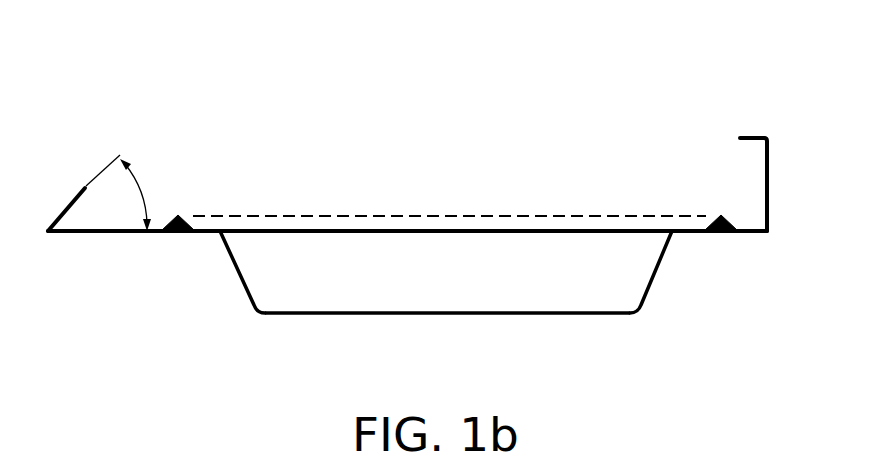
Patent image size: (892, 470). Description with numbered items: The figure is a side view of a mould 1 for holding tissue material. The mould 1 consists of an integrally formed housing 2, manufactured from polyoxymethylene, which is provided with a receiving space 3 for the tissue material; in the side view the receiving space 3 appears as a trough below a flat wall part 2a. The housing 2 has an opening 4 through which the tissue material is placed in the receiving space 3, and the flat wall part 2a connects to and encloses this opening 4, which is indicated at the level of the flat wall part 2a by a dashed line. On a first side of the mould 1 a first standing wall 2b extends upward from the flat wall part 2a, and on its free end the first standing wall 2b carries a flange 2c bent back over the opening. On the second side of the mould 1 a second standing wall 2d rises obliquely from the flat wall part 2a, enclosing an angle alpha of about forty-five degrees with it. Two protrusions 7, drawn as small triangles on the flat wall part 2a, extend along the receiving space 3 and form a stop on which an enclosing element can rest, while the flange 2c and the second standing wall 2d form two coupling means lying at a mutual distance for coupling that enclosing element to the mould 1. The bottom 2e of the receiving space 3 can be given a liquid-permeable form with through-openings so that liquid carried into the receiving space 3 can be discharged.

The mould 1 is at (136, 78).
The housing 2 is at (658, 273).
The flat wall part 2a is at (121, 234).
The first standing wall 2b is at (768, 183).
The flange 2c is at (753, 136).
The second standing wall 2d is at (60, 210).
The bottom 2e is at (450, 313).
The receiving space 3 is at (453, 284).
The opening 4 is at (450, 222).
The protrusions 7 is at (178, 215).